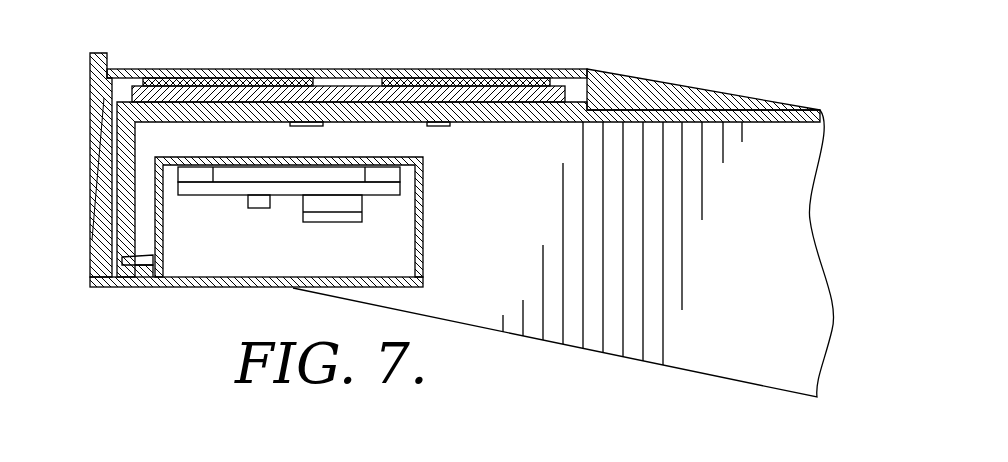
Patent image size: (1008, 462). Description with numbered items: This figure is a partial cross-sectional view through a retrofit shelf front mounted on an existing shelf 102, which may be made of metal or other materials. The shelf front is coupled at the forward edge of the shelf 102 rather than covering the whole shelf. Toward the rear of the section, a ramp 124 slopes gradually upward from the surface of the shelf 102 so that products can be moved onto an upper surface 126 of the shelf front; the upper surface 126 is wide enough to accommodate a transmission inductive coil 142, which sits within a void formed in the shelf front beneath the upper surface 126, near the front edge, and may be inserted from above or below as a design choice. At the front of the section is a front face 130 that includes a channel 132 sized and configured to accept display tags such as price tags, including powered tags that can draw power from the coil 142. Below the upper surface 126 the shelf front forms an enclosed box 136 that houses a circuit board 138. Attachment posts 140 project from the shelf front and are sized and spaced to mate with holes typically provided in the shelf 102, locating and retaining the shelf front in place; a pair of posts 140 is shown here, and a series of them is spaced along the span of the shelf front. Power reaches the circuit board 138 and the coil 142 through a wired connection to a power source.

The shelf 102 is at (818, 110).
The ramp 124 is at (660, 84).
The upper surface 126 is at (538, 70).
The front face 130 is at (88, 70).
The channel 132 is at (96, 130).
The enclosed box 136 is at (423, 256).
The circuit board 138 is at (395, 188).
The attachment posts 140 is at (302, 125).
The transmission inductive coil 142 is at (257, 78).